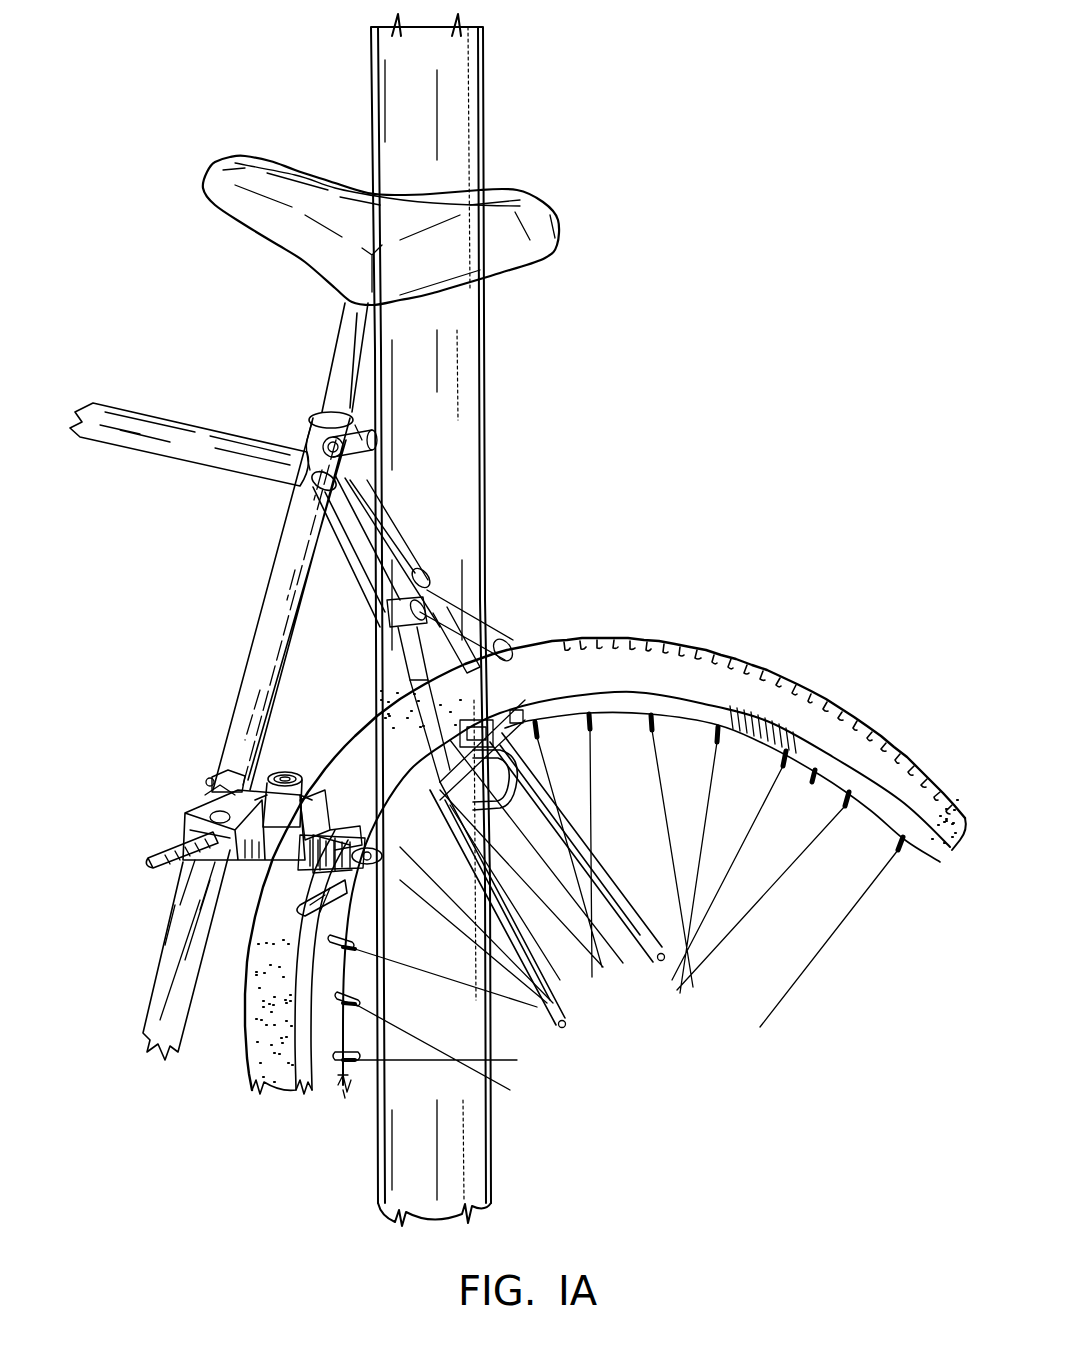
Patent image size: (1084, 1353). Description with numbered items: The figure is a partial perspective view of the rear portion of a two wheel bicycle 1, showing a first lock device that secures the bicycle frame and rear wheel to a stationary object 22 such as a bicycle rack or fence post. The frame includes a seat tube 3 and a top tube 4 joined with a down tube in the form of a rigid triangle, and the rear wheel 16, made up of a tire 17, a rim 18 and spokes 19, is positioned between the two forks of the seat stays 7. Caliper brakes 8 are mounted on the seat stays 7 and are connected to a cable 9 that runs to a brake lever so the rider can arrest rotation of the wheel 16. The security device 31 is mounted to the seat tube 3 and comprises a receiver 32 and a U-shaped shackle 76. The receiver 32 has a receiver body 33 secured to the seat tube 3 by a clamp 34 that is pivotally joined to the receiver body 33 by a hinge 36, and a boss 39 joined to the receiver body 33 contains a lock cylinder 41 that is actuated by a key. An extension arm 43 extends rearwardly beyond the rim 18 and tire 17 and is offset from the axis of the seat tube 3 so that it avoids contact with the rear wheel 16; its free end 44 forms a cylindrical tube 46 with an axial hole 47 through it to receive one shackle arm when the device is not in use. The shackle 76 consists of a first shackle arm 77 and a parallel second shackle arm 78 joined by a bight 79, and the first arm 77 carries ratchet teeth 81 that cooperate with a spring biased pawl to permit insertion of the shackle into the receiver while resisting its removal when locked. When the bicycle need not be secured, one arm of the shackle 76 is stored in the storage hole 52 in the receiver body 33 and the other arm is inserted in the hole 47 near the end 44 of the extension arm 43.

The bicycle 1 is at (155, 370).
The seat tube 3 is at (270, 605).
The top tube 4 is at (130, 442).
The seat stays 7 is at (613, 890).
The caliper brakes 8 is at (477, 623).
The cable 9 is at (400, 523).
The rear wheel 16 is at (810, 690).
The tire 17 is at (857, 737).
The rim 18 is at (816, 765).
The spokes 19 is at (743, 920).
The stationary object 22 is at (455, 385).
The security device 31 is at (156, 815).
The receiver 32 is at (184, 780).
The receiver body 33 is at (185, 878).
The clamp 34 is at (213, 772).
The hinge 36 is at (192, 770).
The boss 39 is at (300, 808).
The lock cylinder 41 is at (285, 777).
The extension arm 43 is at (297, 867).
The free end 44 is at (373, 880).
The cylindrical tube 46 is at (387, 858).
The axial hole 47 is at (383, 855).
The storage hole 52 is at (215, 812).
The U-shaped shackle 76 is at (129, 863).
The first shackle arm 77 is at (225, 858).
The second shackle arm 78 is at (352, 918).
The bight 79 is at (507, 775).
The ratchet teeth 81 is at (172, 868).